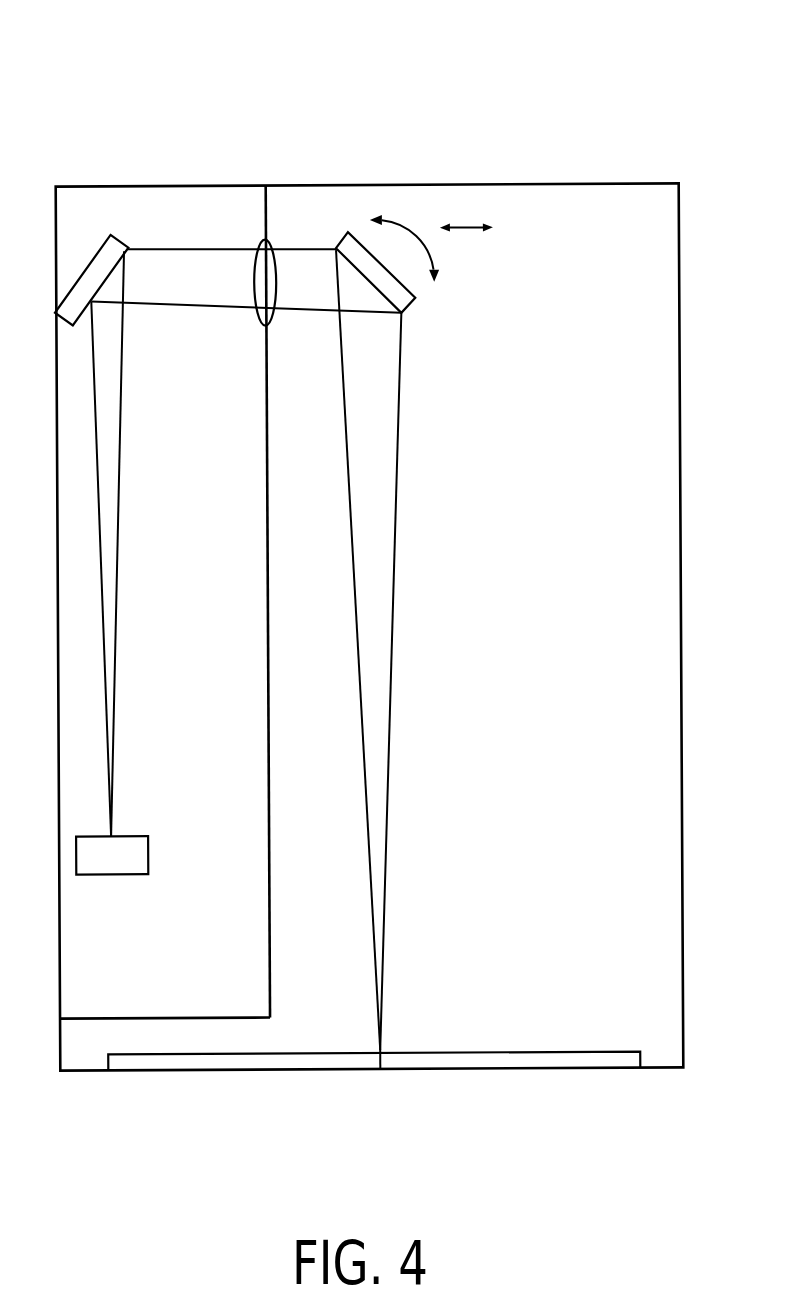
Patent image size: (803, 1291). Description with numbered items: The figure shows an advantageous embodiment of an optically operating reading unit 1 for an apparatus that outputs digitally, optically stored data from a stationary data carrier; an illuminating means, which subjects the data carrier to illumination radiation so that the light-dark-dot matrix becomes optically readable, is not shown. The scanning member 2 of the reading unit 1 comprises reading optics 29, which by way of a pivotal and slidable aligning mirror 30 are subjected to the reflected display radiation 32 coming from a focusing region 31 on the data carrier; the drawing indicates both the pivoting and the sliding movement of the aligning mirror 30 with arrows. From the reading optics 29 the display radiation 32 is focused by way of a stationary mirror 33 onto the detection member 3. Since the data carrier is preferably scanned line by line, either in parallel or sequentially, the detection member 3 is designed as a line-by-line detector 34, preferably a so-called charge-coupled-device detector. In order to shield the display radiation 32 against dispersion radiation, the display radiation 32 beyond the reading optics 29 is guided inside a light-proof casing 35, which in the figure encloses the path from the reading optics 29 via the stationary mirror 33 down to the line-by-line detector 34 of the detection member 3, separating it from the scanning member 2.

The laser measuring apparatus 1 is at (325, 105).
The measurement chamber 2 is at (464, 724).
The laser chamber 3 is at (176, 790).
The lens 29 is at (261, 296).
The adjustable deflection mirror 30 is at (420, 297).
The focal point on surface 31 is at (379, 1093).
The laser beam 32 is at (110, 528).
The deflection mirror 33 is at (97, 268).
The laser source 34 is at (107, 857).
The partition wall 35 is at (270, 928).